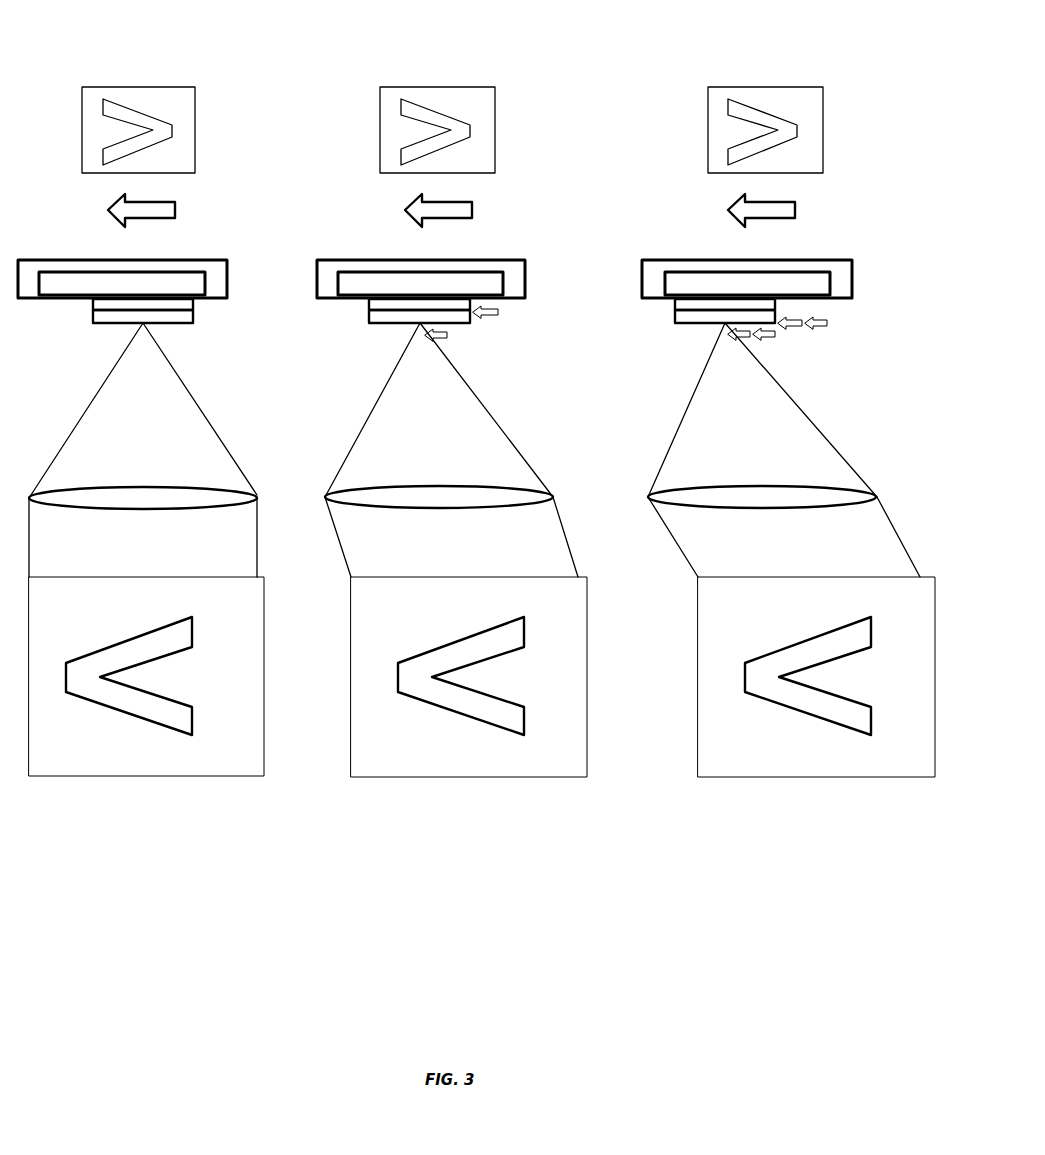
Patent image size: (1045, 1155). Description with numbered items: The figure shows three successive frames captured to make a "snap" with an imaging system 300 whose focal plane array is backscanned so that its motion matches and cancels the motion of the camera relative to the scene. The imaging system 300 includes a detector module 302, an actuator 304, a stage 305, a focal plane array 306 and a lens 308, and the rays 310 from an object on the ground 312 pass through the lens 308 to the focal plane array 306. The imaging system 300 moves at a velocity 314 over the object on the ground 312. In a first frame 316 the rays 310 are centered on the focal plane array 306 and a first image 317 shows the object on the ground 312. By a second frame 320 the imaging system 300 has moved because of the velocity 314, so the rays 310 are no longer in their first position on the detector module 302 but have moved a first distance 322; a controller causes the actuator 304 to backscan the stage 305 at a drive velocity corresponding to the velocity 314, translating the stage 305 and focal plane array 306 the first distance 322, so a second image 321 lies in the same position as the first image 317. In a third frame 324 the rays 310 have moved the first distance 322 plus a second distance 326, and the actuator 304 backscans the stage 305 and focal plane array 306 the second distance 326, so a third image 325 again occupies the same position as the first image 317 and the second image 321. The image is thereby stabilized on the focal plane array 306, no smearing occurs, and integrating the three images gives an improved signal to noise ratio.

The imaging system 300 is at (36, 250).
The detector module 302 is at (56, 258).
The actuator 304 is at (78, 299).
The stage 305 is at (197, 301).
The focal plane array 306 is at (107, 324).
The lens 308 is at (122, 510).
The rays 310 is at (78, 422).
The object on the ground 312 is at (128, 778).
The velocity 314 is at (175, 210).
The first frame 316 is at (68, 84).
The first image 317 is at (189, 166).
The second frame 320 is at (372, 84).
The second image 321 is at (488, 166).
The first distance 322 is at (498, 312).
The third frame 324 is at (694, 84).
The third image 325 is at (816, 166).
The second distance 326 is at (822, 328).